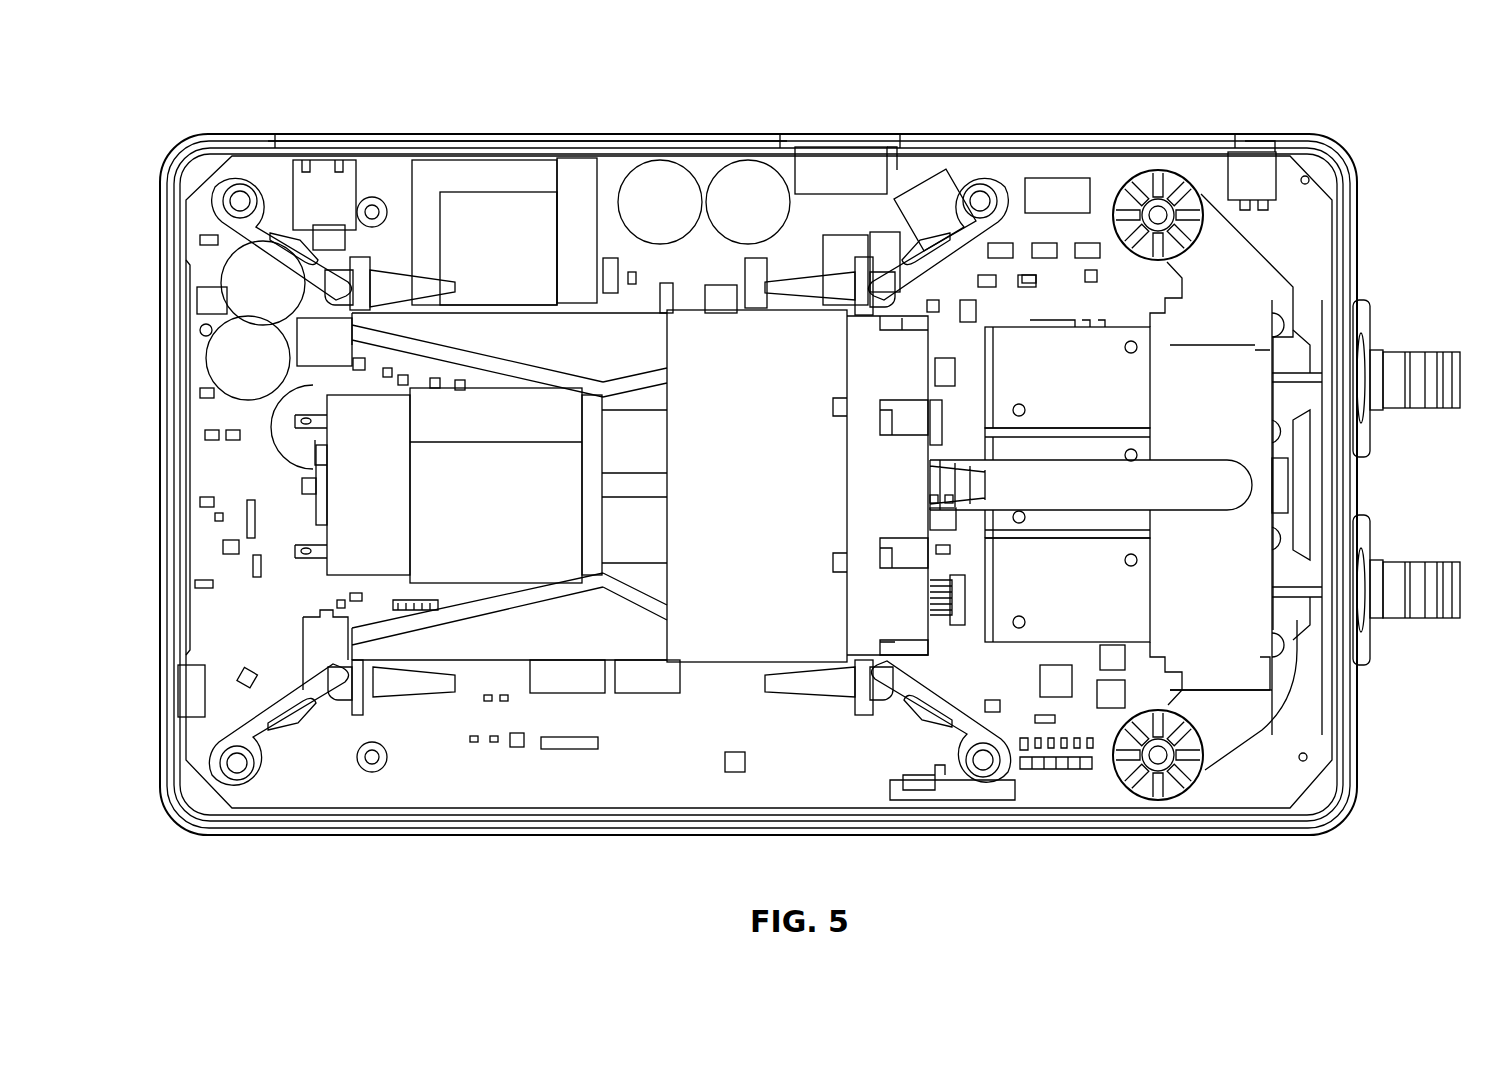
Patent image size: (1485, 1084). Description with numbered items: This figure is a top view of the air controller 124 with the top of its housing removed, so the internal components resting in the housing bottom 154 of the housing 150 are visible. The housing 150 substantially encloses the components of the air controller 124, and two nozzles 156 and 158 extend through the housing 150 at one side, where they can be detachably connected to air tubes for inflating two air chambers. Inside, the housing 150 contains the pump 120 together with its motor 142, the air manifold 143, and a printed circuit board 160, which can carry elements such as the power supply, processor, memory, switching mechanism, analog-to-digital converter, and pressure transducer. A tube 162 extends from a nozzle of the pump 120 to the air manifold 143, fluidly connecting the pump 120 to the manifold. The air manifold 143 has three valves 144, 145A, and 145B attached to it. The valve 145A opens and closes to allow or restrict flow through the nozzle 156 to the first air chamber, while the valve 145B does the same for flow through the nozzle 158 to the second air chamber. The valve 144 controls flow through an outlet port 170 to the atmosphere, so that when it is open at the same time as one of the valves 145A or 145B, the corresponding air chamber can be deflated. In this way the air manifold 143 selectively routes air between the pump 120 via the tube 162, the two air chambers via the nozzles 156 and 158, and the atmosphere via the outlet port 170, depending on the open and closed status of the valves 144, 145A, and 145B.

The pump 120 is at (690, 300).
The air controller 124 is at (232, 122).
The motor 142 is at (382, 505).
The air manifold 143 is at (1235, 285).
The valve 144 is at (1052, 452).
The valve 145A is at (1067, 590).
The valve 145B is at (1067, 374).
The housing 150 is at (191, 830).
The housing bottom 154 is at (272, 832).
The nozzle 156 is at (1420, 625).
The nozzle 158 is at (1415, 347).
The printed circuit board 160 is at (581, 778).
The tube 162 is at (1213, 497).
The outlet port 170 is at (1290, 487).